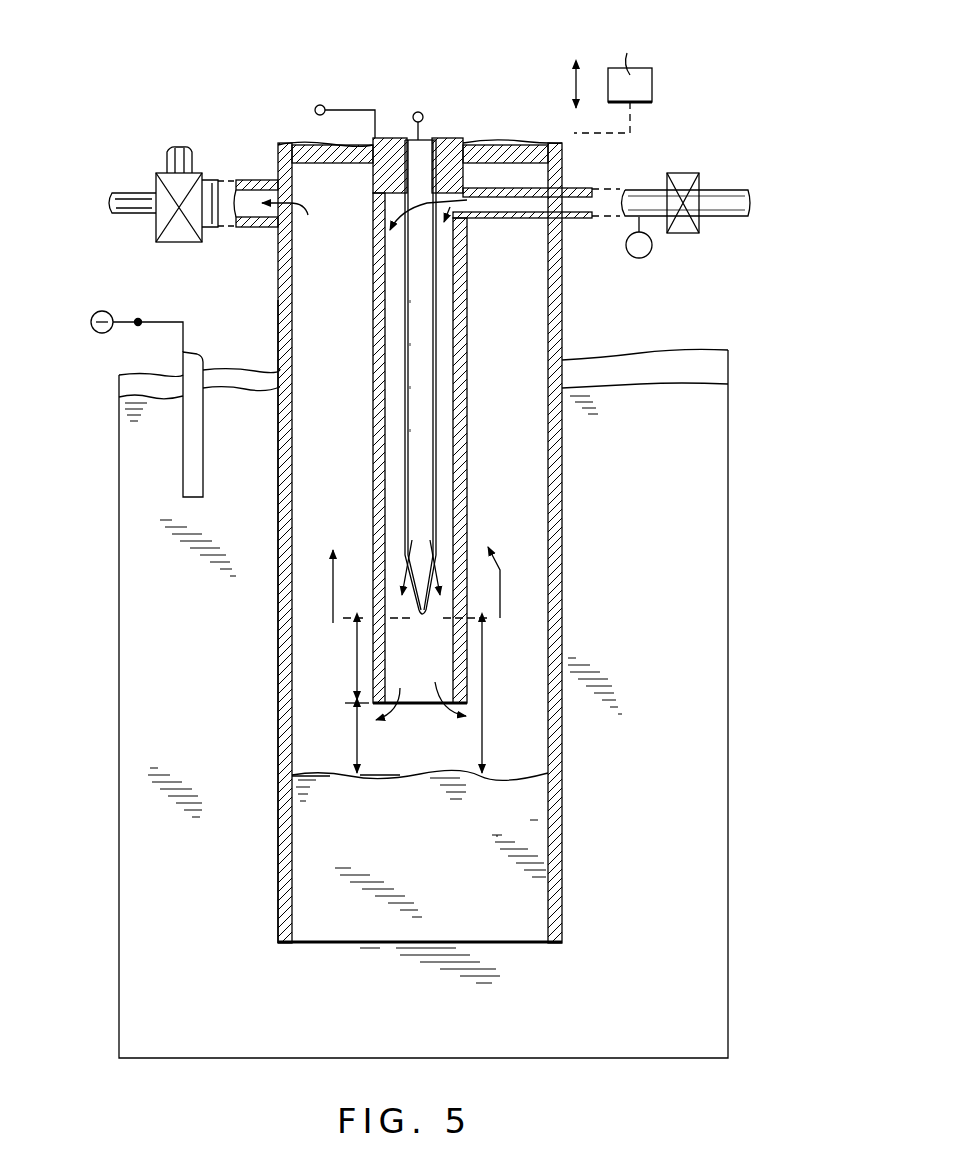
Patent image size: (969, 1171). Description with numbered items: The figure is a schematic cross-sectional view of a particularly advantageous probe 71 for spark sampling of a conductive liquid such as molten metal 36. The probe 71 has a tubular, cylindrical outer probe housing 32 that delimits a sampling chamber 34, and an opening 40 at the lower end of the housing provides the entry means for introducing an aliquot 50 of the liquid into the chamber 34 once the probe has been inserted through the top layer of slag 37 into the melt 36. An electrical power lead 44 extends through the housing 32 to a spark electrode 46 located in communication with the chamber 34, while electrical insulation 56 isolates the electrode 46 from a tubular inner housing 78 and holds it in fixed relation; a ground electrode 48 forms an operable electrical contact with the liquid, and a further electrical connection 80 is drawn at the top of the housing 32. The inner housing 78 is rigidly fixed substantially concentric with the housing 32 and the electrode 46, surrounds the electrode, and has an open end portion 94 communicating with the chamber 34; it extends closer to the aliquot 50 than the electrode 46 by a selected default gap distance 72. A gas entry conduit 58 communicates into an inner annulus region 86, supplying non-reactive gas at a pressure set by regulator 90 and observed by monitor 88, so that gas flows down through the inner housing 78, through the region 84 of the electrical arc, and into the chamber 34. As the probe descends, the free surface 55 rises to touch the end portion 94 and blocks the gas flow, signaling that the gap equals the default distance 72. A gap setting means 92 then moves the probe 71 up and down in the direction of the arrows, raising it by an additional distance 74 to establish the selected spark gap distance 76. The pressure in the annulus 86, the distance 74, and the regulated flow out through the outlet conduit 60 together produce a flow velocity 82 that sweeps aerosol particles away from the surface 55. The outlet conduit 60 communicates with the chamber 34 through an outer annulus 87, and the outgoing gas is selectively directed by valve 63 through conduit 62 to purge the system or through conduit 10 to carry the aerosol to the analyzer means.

The conduit 10 is at (135, 207).
The outer probe housing 32 is at (565, 305).
The sampling chamber 34 is at (310, 686).
The molten metal melt 36 is at (678, 768).
The slag layer 37 is at (681, 381).
The opening 40 is at (393, 943).
The electrical power lead 44 is at (416, 125).
The spark electrode 46 is at (425, 615).
The ground electrode 48 is at (190, 440).
The aliquot 50 is at (467, 903).
The free surface 55 is at (370, 778).
The electrical insulation 56 is at (445, 138).
The conduit 58 is at (585, 188).
The outlet conduit 60 is at (258, 228).
The conduit 62 is at (182, 148).
The valve 63 is at (170, 185).
The probe 71 is at (604, 338).
The default gap distance 72 is at (412, 660).
The additional distance 74 is at (355, 739).
The spark gap distance 76 is at (488, 697).
The inner housing 78 is at (472, 492).
The electrical lead 80 is at (318, 106).
The flow velocity 82 is at (453, 705).
The region of the electrical arc 84 is at (410, 771).
The inner annulus region 86 is at (443, 290).
The outer annulus 87 is at (350, 475).
The monitor 88 is at (652, 250).
The regulator 90 is at (683, 178).
The gap setting means 92 is at (645, 93).
The open end portion 94 is at (425, 705).